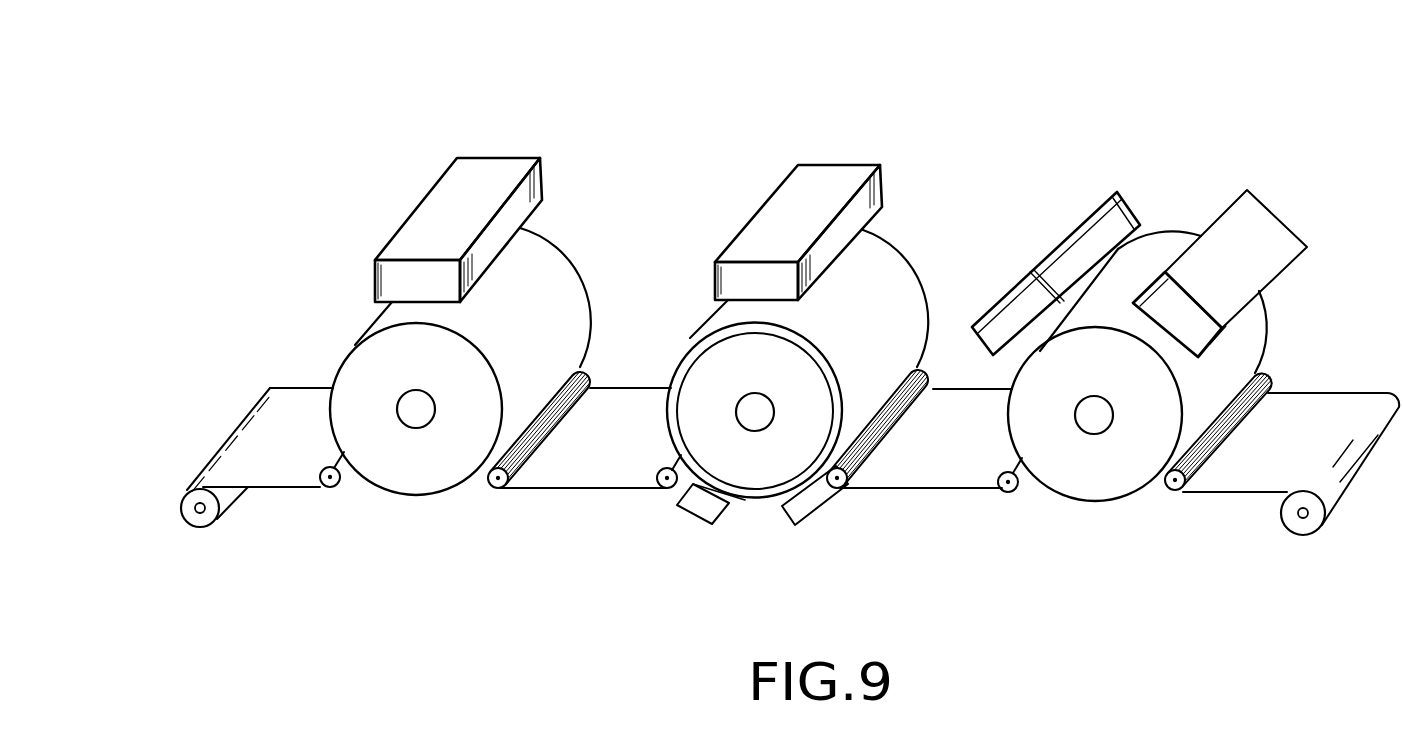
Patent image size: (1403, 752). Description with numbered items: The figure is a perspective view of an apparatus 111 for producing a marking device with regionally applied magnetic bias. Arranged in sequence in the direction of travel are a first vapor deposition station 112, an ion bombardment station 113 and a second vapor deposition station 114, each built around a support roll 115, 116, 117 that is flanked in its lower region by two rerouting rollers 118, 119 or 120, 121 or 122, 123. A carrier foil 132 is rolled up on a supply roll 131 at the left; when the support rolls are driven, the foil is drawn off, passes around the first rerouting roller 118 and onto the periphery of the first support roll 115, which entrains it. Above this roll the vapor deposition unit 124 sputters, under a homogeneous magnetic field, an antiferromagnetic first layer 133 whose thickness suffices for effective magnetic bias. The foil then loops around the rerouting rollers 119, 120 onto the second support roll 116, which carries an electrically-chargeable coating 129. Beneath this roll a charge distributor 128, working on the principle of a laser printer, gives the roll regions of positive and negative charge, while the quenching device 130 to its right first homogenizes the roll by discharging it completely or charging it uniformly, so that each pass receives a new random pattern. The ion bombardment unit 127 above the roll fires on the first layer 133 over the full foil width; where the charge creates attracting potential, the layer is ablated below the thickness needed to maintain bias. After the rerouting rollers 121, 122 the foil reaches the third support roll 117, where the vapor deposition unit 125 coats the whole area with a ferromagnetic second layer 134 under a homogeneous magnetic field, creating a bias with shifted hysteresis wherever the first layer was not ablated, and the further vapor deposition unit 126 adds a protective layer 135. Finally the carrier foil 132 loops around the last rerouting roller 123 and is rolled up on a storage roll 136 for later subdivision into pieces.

The apparatus 111 is at (985, 157).
The first vapor deposition station 112 is at (522, 138).
The ion bombardment station 113 is at (837, 150).
The second vapor deposition station 114 is at (1210, 147).
The support roll 115 is at (397, 478).
The support roll 116 is at (778, 470).
The support roll 117 is at (1093, 483).
The rerouting roller 118 is at (320, 492).
The rerouting roller 119 is at (512, 490).
The rerouting roller 120 is at (660, 482).
The rerouting roller 121 is at (843, 492).
The rerouting roller 122 is at (1005, 492).
The rerouting roller 123 is at (1180, 490).
The vapor deposition unit 124 is at (460, 170).
The vapor deposition unit 125 is at (1105, 213).
The vapor deposition unit 126 is at (1287, 247).
The ion bombardment unit 127 is at (798, 173).
The charge distributor 128 is at (692, 517).
The electrically-chargeable coating 129 is at (740, 500).
The quenching device 130 is at (808, 508).
The supply roll 131 is at (205, 527).
The carrier foil 132 is at (277, 402).
The first layer 133 is at (563, 285).
The second layer 134 is at (1168, 242).
The protective layer 135 is at (1248, 343).
The storage roll 136 is at (1298, 522).